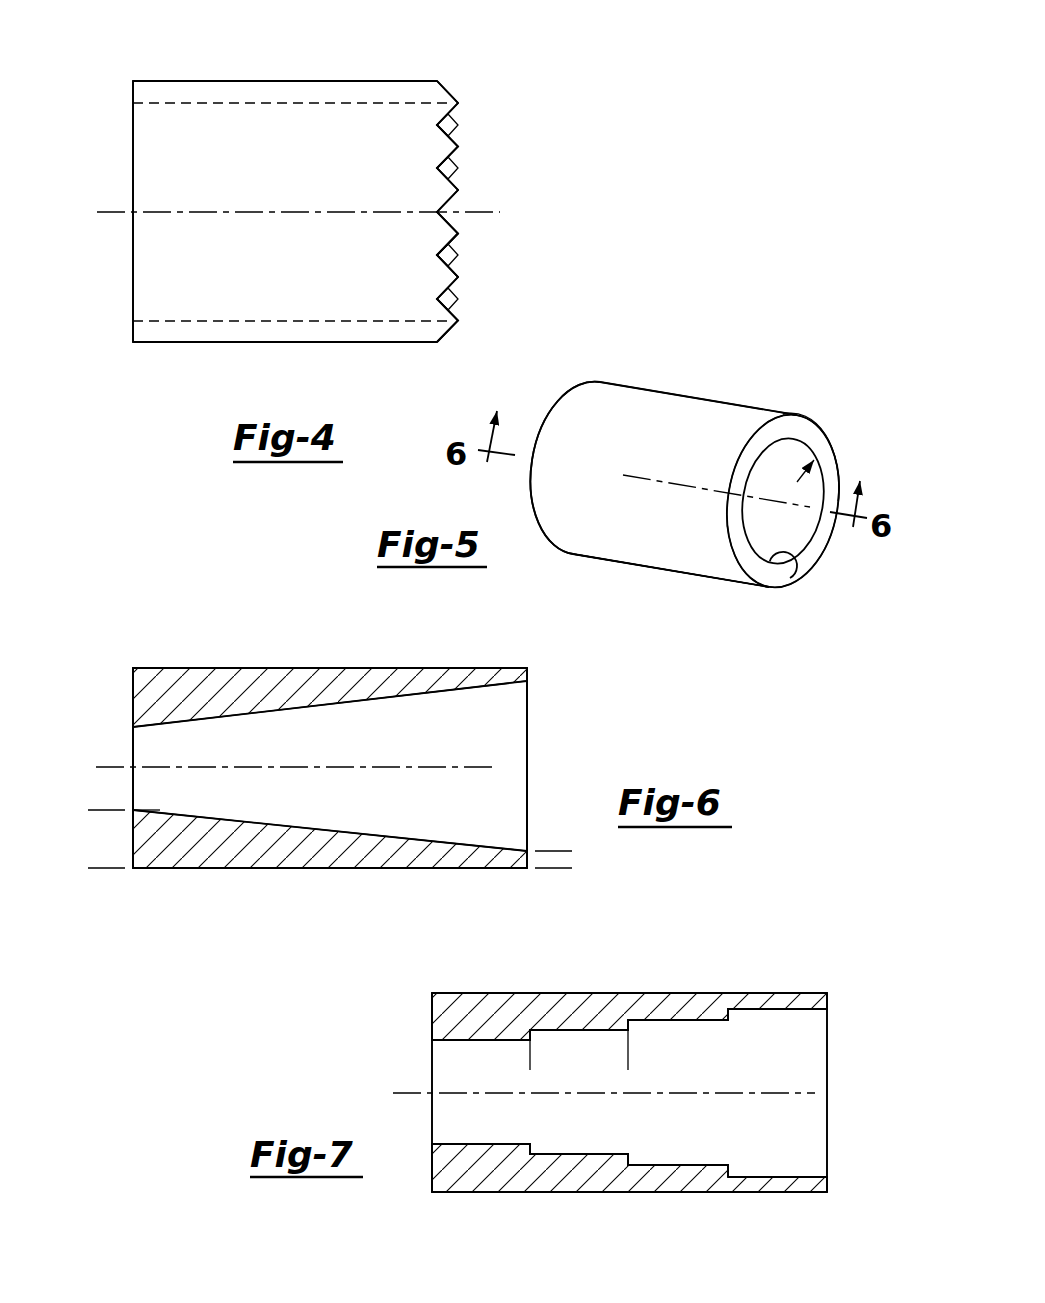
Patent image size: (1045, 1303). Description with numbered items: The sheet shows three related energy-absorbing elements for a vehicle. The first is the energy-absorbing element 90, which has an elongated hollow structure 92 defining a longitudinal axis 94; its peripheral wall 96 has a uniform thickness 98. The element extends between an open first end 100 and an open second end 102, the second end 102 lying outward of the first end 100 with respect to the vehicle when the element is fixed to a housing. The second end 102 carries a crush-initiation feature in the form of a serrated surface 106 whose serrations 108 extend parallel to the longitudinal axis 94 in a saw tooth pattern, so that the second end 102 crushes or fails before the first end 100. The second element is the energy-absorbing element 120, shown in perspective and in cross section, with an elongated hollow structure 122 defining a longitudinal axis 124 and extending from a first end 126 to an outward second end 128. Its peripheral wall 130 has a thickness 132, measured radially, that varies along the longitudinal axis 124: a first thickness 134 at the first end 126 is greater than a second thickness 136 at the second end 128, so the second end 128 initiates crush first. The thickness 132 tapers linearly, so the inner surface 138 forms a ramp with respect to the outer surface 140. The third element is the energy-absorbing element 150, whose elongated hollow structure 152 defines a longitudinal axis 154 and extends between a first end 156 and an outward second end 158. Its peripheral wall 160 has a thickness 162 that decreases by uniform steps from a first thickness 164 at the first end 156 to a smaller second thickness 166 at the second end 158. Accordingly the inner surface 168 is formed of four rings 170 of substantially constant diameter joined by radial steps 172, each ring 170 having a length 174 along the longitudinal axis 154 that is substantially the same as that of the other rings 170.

In FIG. 4, the energy-absorbing element 90 is at (458, 66).
In FIG. 4, the elongated hollow structure 92 is at (283, 285).
In FIG. 4, the longitudinal axis 94 is at (312, 210).
In FIG. 4, the peripheral wall 96 is at (317, 90).
In FIG. 4, the uniform thickness 98 is at (217, 143).
In FIG. 4, the first end 100 is at (130, 180).
In FIG. 4, the second end 102 is at (452, 246).
In FIG. 4, the serrated surface 106 is at (458, 124).
In FIG. 4, the serrations 108 is at (455, 170).
In FIG. 5, the energy-absorbing element 120 is at (746, 342).
In FIG. 6, the energy-absorbing element 120 is at (181, 599).
In FIG. 5, the elongated hollow structure 122 is at (638, 402).
In FIG. 6, the elongated hollow structure 122 is at (227, 668).
In FIG. 5, the longitudinal axis 124 is at (700, 487).
In FIG. 6, the longitudinal axis 124 is at (361, 767).
In FIG. 5, the first end 126 is at (557, 401).
In FIG. 6, the first end 126 is at (129, 695).
In FIG. 5, the second end 128 is at (814, 558).
In FIG. 6, the second end 128 is at (532, 679).
In FIG. 5, the peripheral wall 130 is at (793, 425).
In FIG. 6, the peripheral wall 130 is at (370, 677).
In FIG. 5, the thickness 132 is at (829, 436).
In FIG. 6, the thickness 132 is at (309, 747).
In FIG. 6, the first thickness 134 is at (100, 812).
In FIG. 6, the second thickness 136 is at (563, 816).
In FIG. 5, the inner surface 138 is at (792, 590).
In FIG. 6, the inner surface 138 is at (157, 810).
In FIG. 5, the outer surface 140 is at (767, 592).
In FIG. 6, the outer surface 140 is at (201, 868).
In FIG. 7, the energy-absorbing element 150 is at (806, 927).
In FIG. 7, the elongated hollow structure 152 is at (717, 1001).
In FIG. 7, the longitudinal axis 154 is at (717, 1091).
In FIG. 7, the first end 156 is at (429, 1016).
In FIG. 7, the second end 158 is at (831, 998).
In FIG. 7, the peripheral wall 160 is at (500, 1003).
In FIG. 7, the thickness 162 is at (675, 1058).
In FIG. 7, the first thickness 164 is at (473, 1146).
In FIG. 7, the second thickness 166 is at (799, 1141).
In FIG. 7, the inner surface 168 is at (822, 1175).
In FIG. 7, the rings 170 is at (457, 1046).
In FIG. 7, the radial steps 172 is at (533, 1153).
In FIG. 7, the length 174 is at (626, 1059).